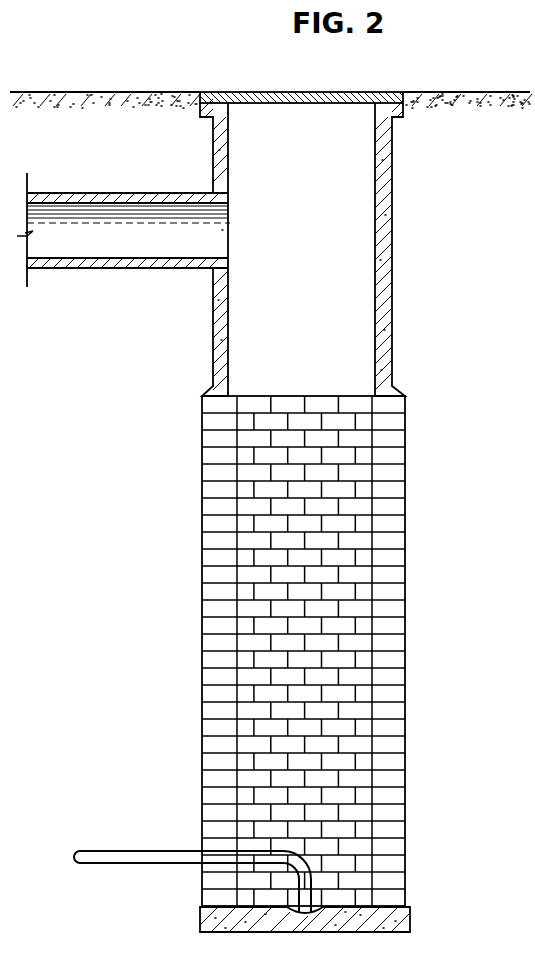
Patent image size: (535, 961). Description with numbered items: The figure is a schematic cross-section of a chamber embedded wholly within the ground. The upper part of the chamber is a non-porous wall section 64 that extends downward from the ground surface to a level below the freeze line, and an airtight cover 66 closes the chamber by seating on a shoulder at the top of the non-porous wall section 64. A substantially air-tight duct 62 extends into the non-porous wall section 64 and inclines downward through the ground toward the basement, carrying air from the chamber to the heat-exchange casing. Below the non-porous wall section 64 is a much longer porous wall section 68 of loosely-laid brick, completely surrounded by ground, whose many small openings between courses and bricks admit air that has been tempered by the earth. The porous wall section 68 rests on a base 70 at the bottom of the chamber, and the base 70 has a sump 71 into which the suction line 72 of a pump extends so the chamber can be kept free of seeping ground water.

The duct 62 is at (90, 268).
The non-porous wall section 64 is at (392, 245).
The airtight cover 66 is at (313, 92).
The porous wall section 68 is at (400, 528).
The base 70 is at (410, 922).
The sump 71 is at (277, 931).
The suction line 72 is at (132, 851).